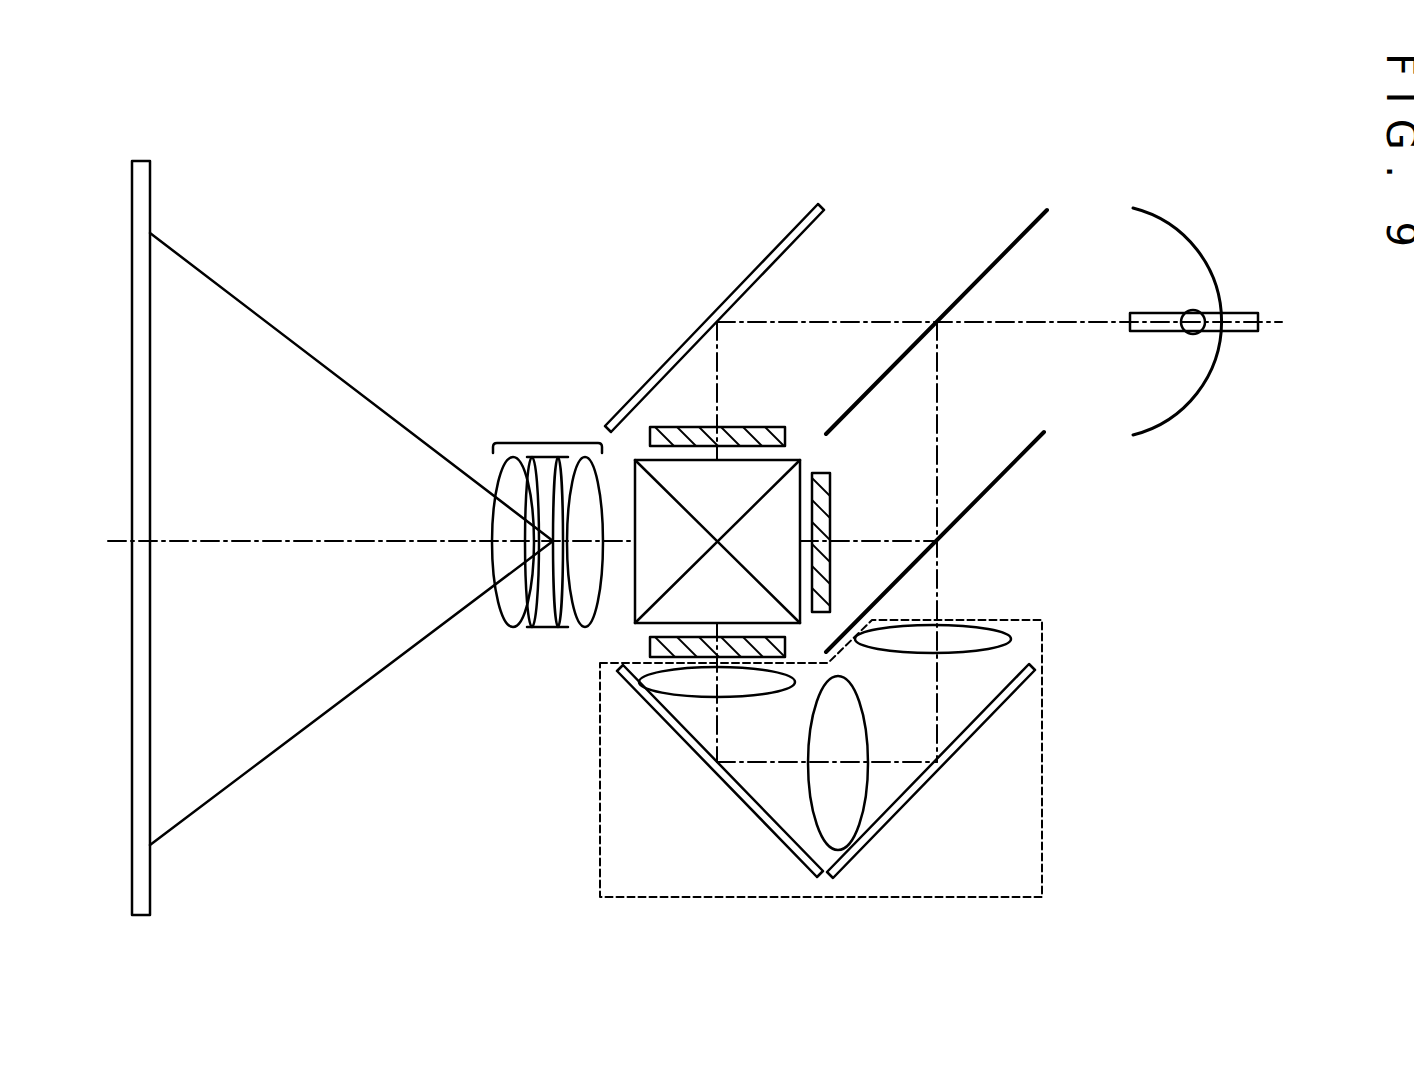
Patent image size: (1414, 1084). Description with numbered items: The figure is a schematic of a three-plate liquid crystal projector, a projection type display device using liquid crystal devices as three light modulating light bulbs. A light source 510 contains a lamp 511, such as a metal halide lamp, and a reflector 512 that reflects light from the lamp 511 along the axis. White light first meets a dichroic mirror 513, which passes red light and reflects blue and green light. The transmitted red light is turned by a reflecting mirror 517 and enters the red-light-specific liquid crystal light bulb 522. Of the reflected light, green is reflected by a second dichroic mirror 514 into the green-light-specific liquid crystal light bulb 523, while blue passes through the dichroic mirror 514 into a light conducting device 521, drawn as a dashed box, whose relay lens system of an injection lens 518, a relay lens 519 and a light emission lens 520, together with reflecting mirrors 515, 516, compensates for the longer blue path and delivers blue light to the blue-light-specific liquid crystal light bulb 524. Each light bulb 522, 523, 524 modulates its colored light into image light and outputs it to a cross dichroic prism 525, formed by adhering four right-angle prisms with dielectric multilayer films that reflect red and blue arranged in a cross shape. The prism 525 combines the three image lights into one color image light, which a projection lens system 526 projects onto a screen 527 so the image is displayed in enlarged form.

The light source 510 is at (1172, 257).
The lamp 511 is at (1200, 312).
The reflector 512 is at (1212, 375).
The dichroic mirror 513 is at (997, 258).
The dichroic mirror 514 is at (1015, 465).
The reflecting mirror 515 is at (1013, 703).
The reflecting mirror 516 is at (757, 823).
The reflecting mirror 517 is at (708, 312).
The injection lens 518 is at (952, 628).
The relay lens 519 is at (855, 800).
The light emission lens 520 is at (668, 688).
The light conducting device 521 is at (1042, 820).
The liquid crystal light bulb 522 is at (738, 427).
The liquid crystal light bulb 523 is at (832, 518).
The liquid crystal light bulb 524 is at (640, 648).
The cross dichroic prism 525 is at (634, 597).
The projection lens system 526 is at (520, 440).
The screen 527 is at (150, 780).